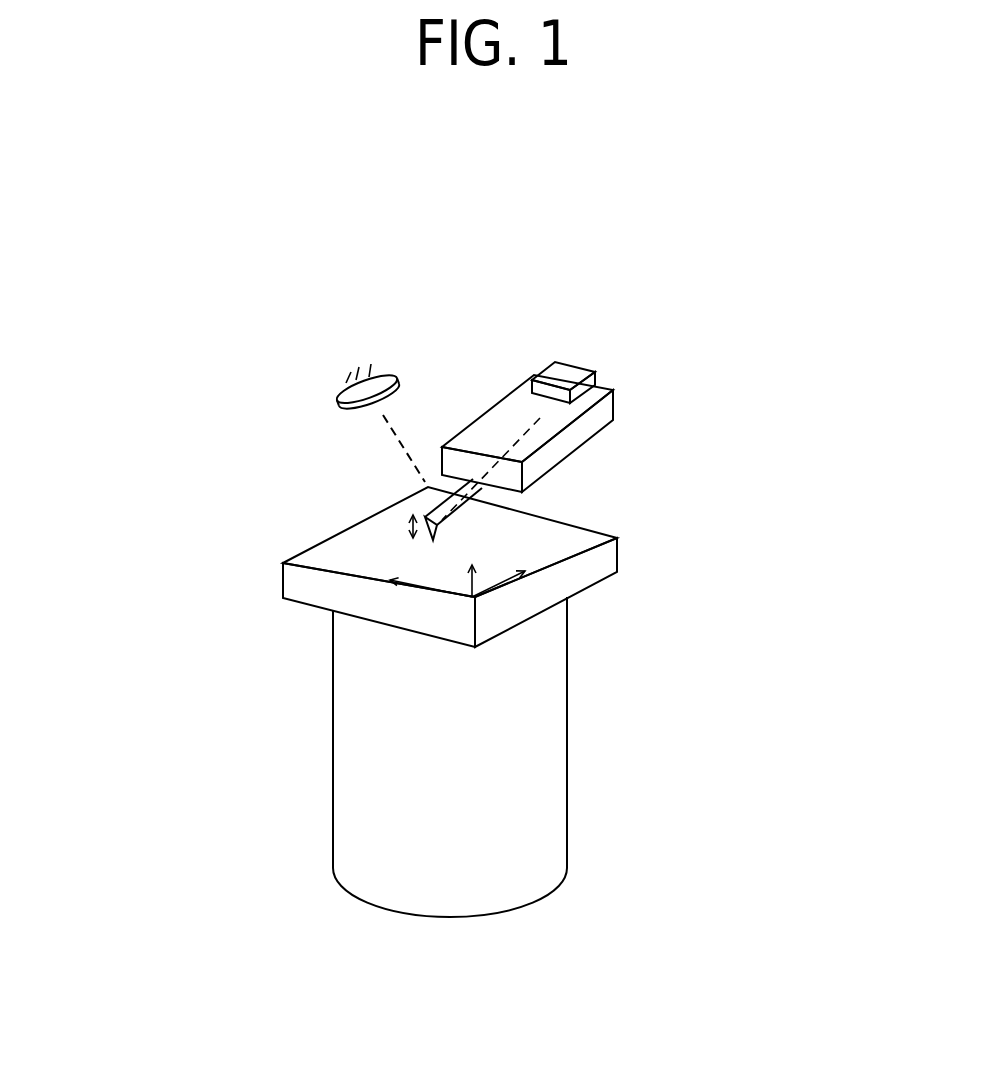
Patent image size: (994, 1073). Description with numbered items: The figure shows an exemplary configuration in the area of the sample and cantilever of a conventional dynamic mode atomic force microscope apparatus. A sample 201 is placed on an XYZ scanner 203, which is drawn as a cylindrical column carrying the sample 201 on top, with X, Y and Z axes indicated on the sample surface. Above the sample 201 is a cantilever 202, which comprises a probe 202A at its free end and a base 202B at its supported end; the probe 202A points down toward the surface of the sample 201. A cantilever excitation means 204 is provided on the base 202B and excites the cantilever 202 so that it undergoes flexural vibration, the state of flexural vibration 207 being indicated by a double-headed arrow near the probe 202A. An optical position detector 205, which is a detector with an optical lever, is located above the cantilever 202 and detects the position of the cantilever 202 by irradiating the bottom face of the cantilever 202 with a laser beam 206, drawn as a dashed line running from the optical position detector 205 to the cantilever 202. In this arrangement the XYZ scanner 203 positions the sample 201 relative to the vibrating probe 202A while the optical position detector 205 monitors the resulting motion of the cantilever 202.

The sample 201 is at (542, 568).
The cantilever 202 is at (468, 505).
The probe 202A is at (245, 562).
The base 202B is at (573, 452).
The XYZ scanner 203 is at (553, 788).
The cantilever excitation means 204 is at (598, 375).
The optical position detector 205 is at (345, 378).
The laser beam 206 is at (408, 449).
The state of flexural vibration 207 is at (402, 523).